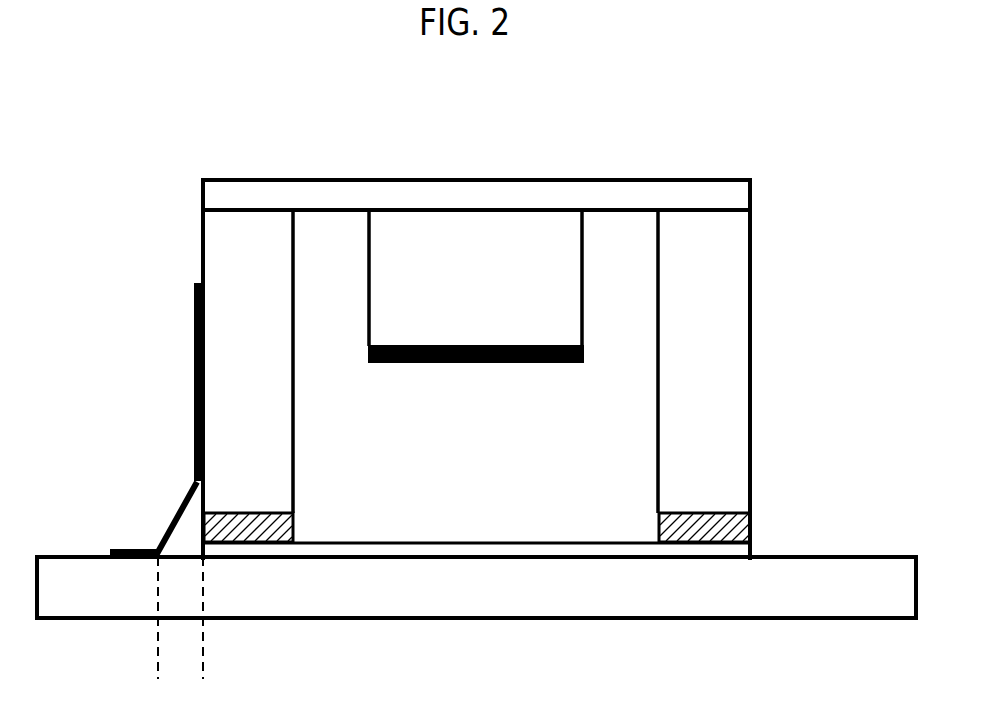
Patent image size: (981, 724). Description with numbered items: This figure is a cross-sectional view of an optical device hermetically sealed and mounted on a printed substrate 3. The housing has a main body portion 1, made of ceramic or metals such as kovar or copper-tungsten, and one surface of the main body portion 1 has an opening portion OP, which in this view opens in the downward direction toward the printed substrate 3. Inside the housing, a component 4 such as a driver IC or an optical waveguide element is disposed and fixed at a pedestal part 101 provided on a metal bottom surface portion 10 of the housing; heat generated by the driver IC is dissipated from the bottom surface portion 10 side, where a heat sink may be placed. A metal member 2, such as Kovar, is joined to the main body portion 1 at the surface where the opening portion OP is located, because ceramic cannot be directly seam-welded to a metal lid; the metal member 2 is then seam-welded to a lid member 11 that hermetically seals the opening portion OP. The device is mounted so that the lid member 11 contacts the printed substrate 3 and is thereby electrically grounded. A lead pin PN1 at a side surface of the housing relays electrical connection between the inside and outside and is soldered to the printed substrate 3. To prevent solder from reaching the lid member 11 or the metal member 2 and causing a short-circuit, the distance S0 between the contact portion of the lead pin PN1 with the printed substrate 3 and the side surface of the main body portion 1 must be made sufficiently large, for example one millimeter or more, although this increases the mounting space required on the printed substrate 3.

The main body portion 1 is at (718, 318).
The metal member 2 is at (731, 525).
The printed substrate 3 is at (846, 587).
The component 4 is at (438, 364).
The bottom surface portion 10 is at (697, 197).
The lid member 11 is at (603, 550).
The pedestal part 101 is at (538, 240).
The opening portion OP is at (537, 527).
The lead pin PN1 is at (170, 518).
The distance S0 is at (95, 647).